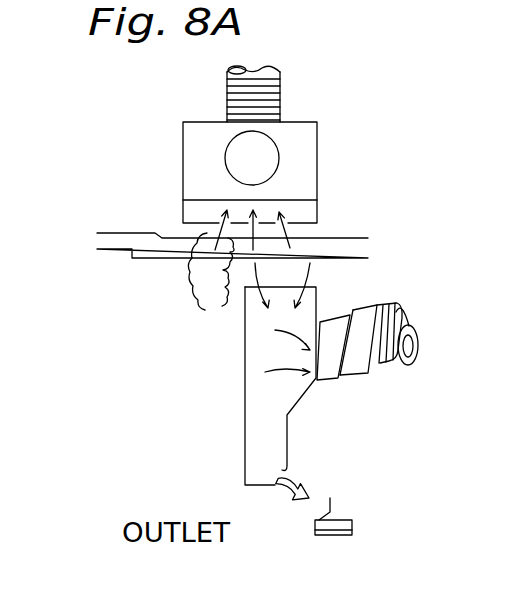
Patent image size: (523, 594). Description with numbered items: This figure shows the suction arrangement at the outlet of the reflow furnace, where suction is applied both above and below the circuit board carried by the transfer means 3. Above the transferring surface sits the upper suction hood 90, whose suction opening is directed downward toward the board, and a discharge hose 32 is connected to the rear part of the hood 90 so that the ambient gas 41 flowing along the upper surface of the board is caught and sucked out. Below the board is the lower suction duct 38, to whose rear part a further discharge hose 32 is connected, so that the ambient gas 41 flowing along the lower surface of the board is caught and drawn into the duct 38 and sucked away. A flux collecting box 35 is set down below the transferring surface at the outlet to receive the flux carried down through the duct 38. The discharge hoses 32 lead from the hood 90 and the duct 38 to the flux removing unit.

The transfer means 3 is at (98, 263).
The discharge hose 32 is at (280, 93).
The flux collecting box 35 is at (352, 530).
The suction duct 38 is at (245, 423).
The ambient gas 41 is at (212, 297).
The upper suction hood 90 is at (182, 158).